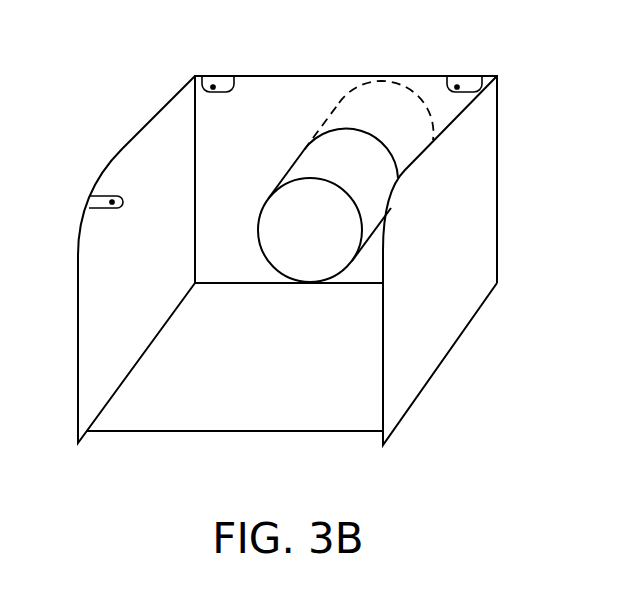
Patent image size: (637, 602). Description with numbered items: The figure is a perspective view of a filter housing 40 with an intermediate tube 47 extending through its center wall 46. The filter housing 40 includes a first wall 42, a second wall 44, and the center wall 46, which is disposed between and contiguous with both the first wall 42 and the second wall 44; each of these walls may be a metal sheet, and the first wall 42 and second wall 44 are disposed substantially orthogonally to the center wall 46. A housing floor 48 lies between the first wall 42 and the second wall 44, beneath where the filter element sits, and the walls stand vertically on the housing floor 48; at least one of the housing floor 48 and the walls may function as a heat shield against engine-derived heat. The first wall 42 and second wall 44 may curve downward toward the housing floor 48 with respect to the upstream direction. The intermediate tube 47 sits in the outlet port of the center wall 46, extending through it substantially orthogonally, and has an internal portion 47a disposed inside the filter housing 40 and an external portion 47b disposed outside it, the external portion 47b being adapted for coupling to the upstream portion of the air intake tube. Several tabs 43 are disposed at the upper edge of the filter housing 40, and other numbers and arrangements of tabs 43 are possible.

The filter housing 40 is at (106, 44).
The first wall 42 is at (424, 264).
The tab 43 is at (222, 80).
The second wall 44 is at (140, 218).
The center wall 46 is at (222, 171).
The intermediate tube 47 is at (326, 242).
The internal portion 47a is at (318, 172).
The external portion 47b is at (358, 120).
The housing floor 48 is at (251, 367).